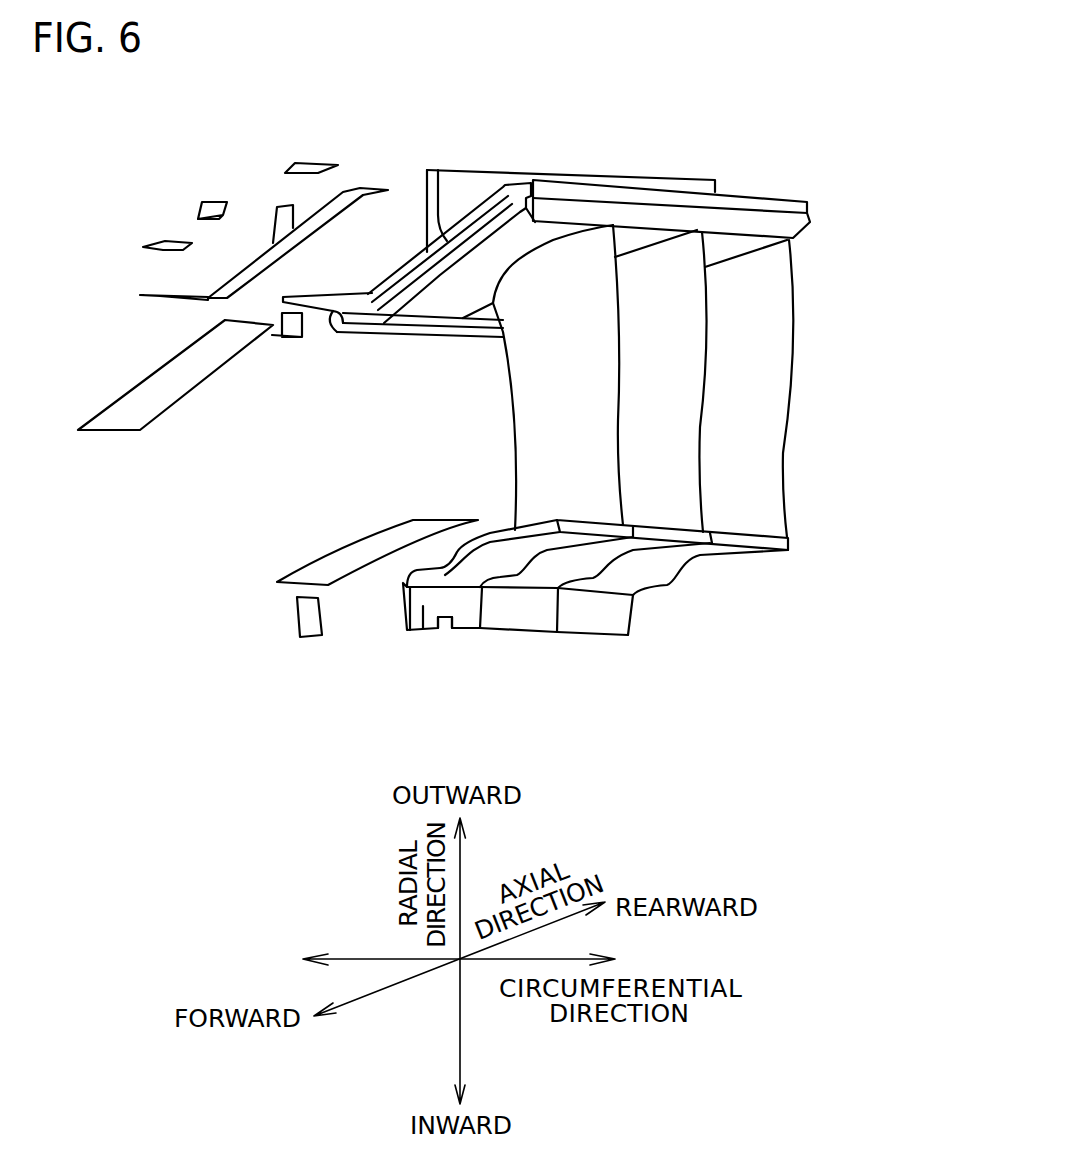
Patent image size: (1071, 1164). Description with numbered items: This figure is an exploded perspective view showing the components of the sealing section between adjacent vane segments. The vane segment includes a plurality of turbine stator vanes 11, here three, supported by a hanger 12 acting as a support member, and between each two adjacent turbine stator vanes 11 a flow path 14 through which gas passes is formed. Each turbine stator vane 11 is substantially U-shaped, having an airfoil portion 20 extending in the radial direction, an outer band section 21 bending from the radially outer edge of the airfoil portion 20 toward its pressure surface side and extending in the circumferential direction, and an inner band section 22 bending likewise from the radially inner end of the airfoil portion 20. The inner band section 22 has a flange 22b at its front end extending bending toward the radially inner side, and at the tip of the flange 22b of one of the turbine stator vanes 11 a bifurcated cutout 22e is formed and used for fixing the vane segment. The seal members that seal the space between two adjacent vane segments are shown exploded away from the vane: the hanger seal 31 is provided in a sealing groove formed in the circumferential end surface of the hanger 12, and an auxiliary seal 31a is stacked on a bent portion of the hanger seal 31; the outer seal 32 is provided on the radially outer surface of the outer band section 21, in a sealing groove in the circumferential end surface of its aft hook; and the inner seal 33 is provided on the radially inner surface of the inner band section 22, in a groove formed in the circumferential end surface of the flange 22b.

The turbine stator vane 11 is at (797, 327).
The hanger 12 is at (670, 175).
The flow path 14 is at (663, 488).
The airfoil portion 20 is at (516, 433).
The outer band section 21 is at (433, 308).
The inner band section 22 is at (470, 548).
The flange 22b is at (423, 608).
The bifurcated cutout 22e is at (443, 629).
The hanger seal 31 is at (337, 193).
The auxiliary seal 31a is at (291, 167).
The outer seal 32 is at (225, 352).
The inner seal 33 is at (307, 568).